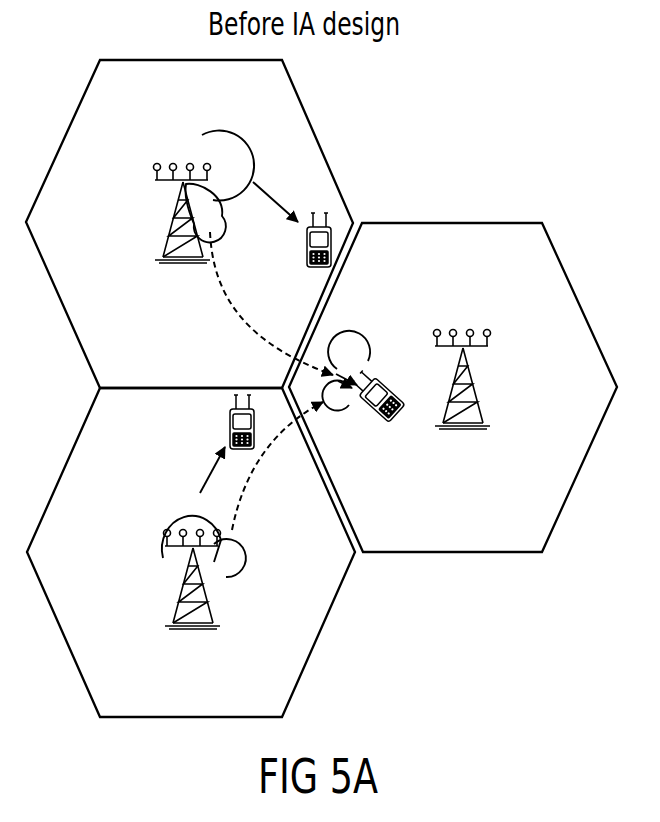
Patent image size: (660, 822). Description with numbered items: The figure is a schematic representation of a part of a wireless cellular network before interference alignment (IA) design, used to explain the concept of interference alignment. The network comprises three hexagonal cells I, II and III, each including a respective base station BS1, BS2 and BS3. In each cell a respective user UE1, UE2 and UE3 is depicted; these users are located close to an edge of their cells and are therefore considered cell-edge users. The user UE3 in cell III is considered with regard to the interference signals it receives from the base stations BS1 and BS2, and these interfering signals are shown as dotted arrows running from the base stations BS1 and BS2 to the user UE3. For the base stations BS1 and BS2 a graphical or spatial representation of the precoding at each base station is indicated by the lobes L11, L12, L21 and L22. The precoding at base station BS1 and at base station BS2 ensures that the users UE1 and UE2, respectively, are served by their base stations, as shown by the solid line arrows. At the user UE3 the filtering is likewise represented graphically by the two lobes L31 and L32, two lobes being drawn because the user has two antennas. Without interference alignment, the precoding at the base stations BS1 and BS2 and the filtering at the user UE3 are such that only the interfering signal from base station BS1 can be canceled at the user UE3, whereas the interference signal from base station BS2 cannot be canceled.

The cell I is at (189, 224).
The cell II is at (191, 552).
The cell III is at (453, 387).
The base station BS1 is at (147, 214).
The base station BS2 is at (151, 580).
The base station BS3 is at (499, 380).
The user UE1 is at (332, 233).
The user UE2 is at (228, 435).
The user UE3 is at (378, 382).
The lobe L11 is at (217, 133).
The lobe L12 is at (218, 221).
The lobe L21 is at (165, 527).
The lobe L22 is at (237, 573).
The lobe L31 is at (347, 331).
The lobe L32 is at (342, 409).